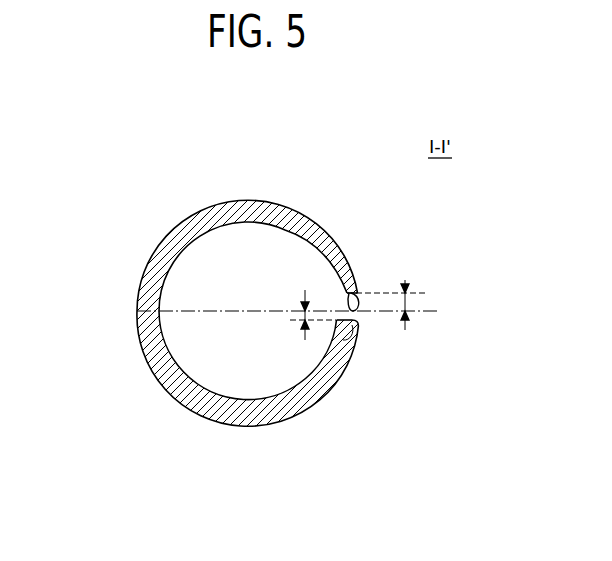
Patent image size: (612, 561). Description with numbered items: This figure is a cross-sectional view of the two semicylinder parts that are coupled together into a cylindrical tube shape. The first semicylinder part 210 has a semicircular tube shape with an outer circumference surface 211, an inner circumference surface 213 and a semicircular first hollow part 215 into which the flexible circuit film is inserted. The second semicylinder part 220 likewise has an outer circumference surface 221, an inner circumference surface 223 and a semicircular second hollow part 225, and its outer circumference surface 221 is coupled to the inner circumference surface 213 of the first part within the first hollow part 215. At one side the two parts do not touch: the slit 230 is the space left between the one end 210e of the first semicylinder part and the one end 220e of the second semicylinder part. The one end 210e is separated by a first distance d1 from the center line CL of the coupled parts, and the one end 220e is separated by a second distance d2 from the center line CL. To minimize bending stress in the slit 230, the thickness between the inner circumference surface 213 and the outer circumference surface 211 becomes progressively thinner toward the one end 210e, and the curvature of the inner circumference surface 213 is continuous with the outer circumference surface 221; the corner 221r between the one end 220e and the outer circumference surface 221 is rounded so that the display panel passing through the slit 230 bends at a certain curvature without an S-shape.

The first semicylinder part 210 is at (113, 152).
The outer circumference surface 211 is at (146, 252).
The inner circumference surface 213 is at (197, 251).
The first hollow part 215 is at (227, 268).
The one end of first semicylinder part 210e is at (347, 302).
The slit 230 is at (360, 302).
The second semicylinder part 220 is at (252, 476).
The outer circumference surface 221 is at (146, 366).
The inner circumference surface 223 is at (197, 370).
The second hollow part 225 is at (262, 373).
The corner 221r is at (352, 335).
The one end of second semicylinder part 220e is at (360, 322).
The center line CL is at (302, 310).
The first distance d1 is at (424, 296).
The second distance d2 is at (292, 320).